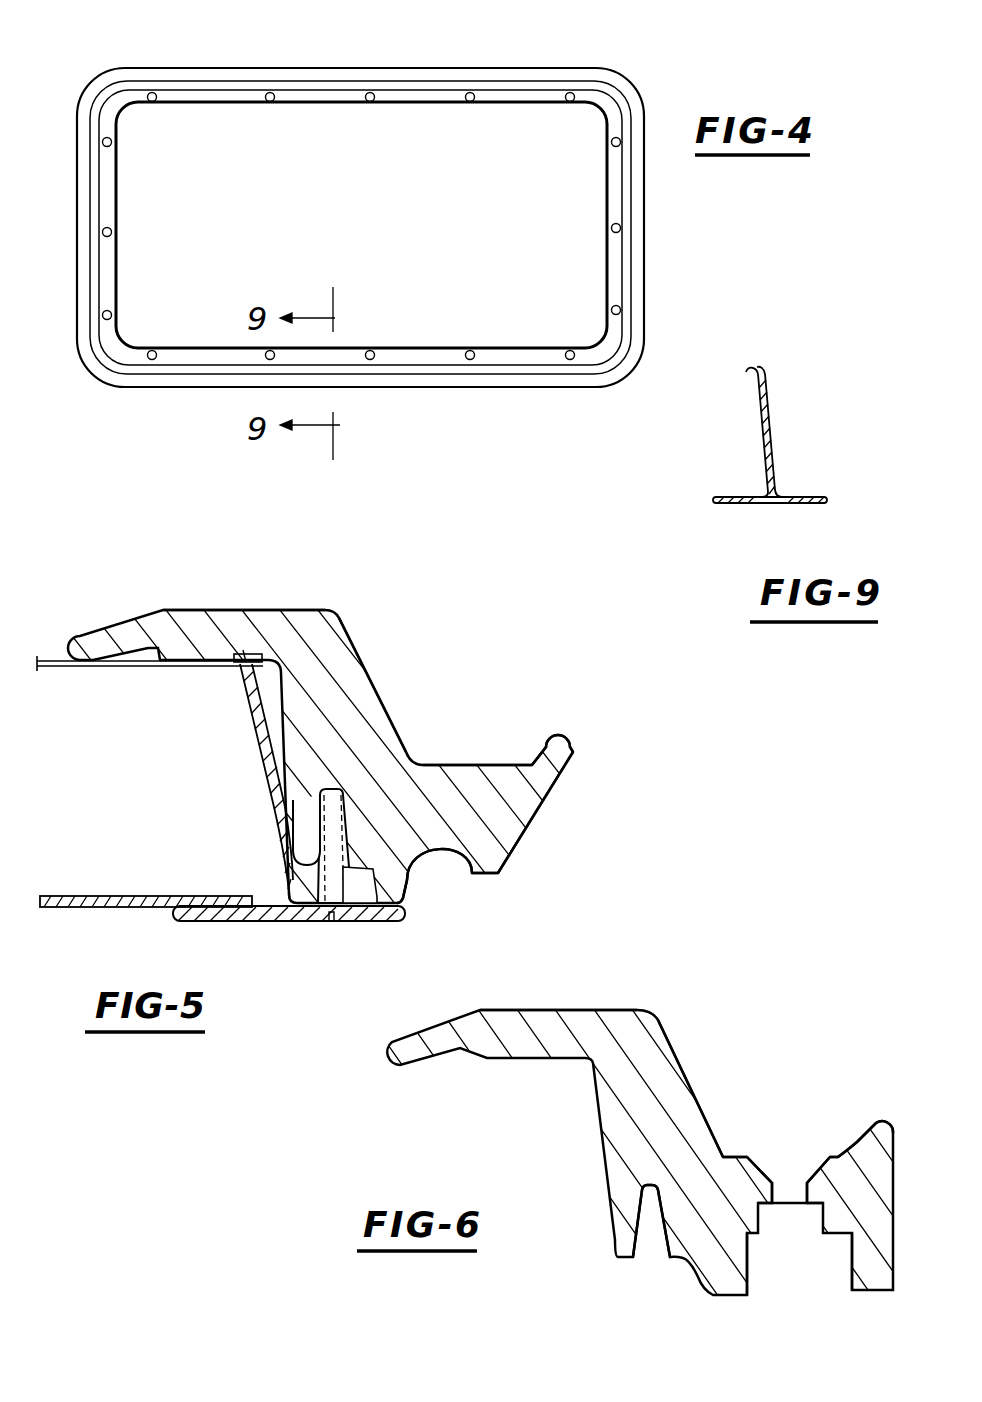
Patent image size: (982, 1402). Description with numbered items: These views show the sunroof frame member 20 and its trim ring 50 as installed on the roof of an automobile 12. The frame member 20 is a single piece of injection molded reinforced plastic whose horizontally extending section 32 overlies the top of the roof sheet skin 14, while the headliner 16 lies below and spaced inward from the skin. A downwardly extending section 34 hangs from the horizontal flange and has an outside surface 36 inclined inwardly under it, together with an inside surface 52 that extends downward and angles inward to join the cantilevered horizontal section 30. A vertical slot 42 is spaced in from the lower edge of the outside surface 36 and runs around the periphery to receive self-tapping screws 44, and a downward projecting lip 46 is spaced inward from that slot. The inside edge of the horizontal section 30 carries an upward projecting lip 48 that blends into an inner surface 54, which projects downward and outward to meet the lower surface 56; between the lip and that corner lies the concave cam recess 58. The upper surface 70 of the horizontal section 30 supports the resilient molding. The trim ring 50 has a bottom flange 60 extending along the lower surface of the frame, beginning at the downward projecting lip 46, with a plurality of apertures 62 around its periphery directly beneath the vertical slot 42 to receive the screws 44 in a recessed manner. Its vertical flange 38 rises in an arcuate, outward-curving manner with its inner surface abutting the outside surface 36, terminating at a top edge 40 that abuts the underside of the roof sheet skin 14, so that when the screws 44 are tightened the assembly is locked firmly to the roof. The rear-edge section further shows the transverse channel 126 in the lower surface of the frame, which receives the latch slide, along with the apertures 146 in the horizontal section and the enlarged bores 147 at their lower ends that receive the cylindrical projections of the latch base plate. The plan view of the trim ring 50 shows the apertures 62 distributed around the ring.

In FIG. 6, the automobile 12 is at (893, 1250).
In FIG. 5, the roof sheet skin 14 is at (62, 660).
In FIG. 5, the headliner 16 is at (77, 907).
In FIG. 5, the frame member 20 is at (373, 619).
In FIG. 6, the frame member 20 is at (574, 1152).
In FIG. 5, the horizontal section 30 is at (500, 780).
In FIG. 6, the horizontal section 30 is at (740, 1185).
In FIG. 5, the horizontally extending section 32 is at (250, 610).
In FIG. 6, the horizontally extending section 32 is at (580, 1015).
In FIG. 5, the downwardly extending section 34 is at (380, 726).
In FIG. 6, the downwardly extending section 34 is at (695, 1125).
In FIG. 5, the outside surface 36 is at (282, 708).
In FIG. 9, the vertical flange 38 is at (764, 453).
In FIG. 5, the vertical flange 38 is at (272, 832).
In FIG. 9, the top edge 40 is at (757, 372).
In FIG. 5, the top edge 40 is at (240, 660).
In FIG. 5, the vertical slot 42 is at (336, 790).
In FIG. 6, the vertical slot 42 is at (653, 1232).
In FIG. 5, the self-tapping screws 44 is at (300, 921).
In FIG. 5, the downward projecting lip 46 is at (397, 903).
In FIG. 5, the upward projecting lip 48 is at (576, 746).
In FIG. 6, the upward projecting lip 48 is at (881, 1122).
In FIG. 4, the trim ring 50 is at (519, 53).
In FIG. 9, the trim ring 50 is at (778, 460).
In FIG. 5, the trim ring 50 is at (289, 815).
In FIG. 5, the inside surface 52 is at (375, 683).
In FIG. 6, the inside surface 52 is at (676, 1052).
In FIG. 5, the inner surface 54 is at (540, 821).
In FIG. 5, the lower surface 56 is at (498, 874).
In FIG. 5, the cam recess 58 is at (428, 853).
In FIG. 9, the bottom flange 60 is at (756, 504).
In FIG. 5, the bottom flange 60 is at (250, 921).
In FIG. 4, the apertures 62 is at (112, 233).
In FIG. 9, the apertures 62 is at (800, 496).
In FIG. 5, the apertures 62 is at (345, 922).
In FIG. 5, the upper surface 70 is at (470, 766).
In FIG. 6, the upper surface 70 is at (840, 1156).
In FIG. 6, the transverse channel 126 is at (766, 1270).
In FIG. 6, the apertures 146 is at (786, 1157).
In FIG. 6, the enlarged bores 147 is at (822, 1222).